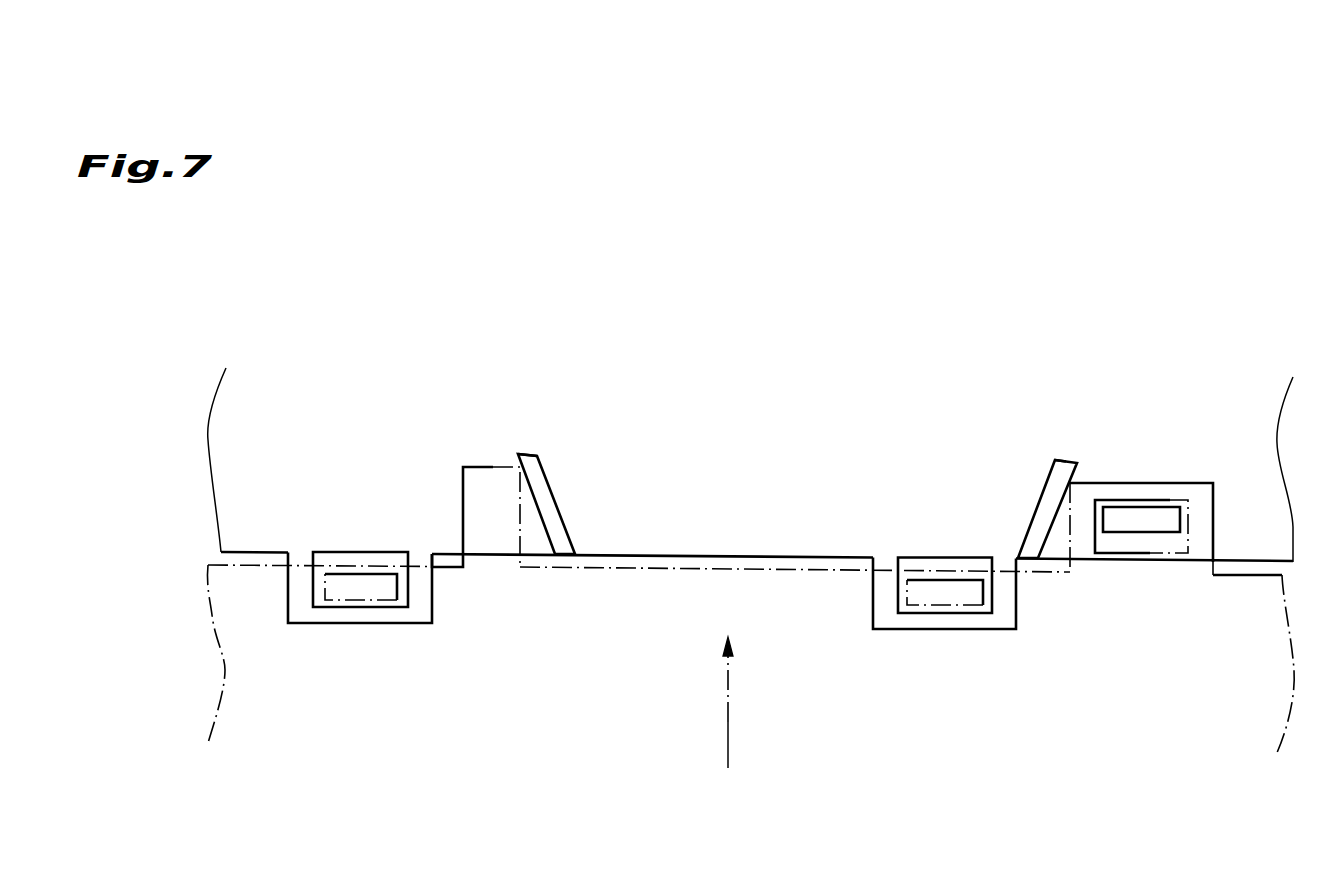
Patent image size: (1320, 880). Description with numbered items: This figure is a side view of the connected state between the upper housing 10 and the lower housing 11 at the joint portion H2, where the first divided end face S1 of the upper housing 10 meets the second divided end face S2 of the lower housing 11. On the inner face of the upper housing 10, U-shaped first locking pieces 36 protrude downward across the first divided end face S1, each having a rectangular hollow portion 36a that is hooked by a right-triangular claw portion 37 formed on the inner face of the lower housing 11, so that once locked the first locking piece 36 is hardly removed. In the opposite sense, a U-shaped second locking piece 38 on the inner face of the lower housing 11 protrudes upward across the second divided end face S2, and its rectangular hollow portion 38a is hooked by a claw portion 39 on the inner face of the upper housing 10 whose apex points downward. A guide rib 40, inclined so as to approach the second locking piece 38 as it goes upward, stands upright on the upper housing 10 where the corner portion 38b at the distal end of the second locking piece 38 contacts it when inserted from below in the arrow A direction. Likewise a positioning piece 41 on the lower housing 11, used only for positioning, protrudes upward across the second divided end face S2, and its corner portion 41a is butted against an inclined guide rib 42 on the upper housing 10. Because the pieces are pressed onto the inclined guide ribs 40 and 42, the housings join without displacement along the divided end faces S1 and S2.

The upper housing 10 is at (208, 438).
The lower housing 11 is at (220, 657).
The first locking piece 36 is at (435, 617).
The rectangular hollow portion 36a is at (408, 582).
The claw portion 37 is at (367, 585).
The second locking piece 38 is at (1185, 483).
The rectangular hollow portion 38a is at (1107, 498).
The corner portion 38b is at (1056, 466).
The claw portion 39 is at (1140, 515).
The guide rib 40 is at (1035, 520).
The positioning piece 41 is at (463, 502).
The corner portion 41a is at (537, 456).
The guide rib 42 is at (567, 527).
The first divided end face S1 is at (727, 555).
The second divided end face S2 is at (710, 569).
The joint portion H2 is at (843, 429).
The arrow direction A is at (730, 722).